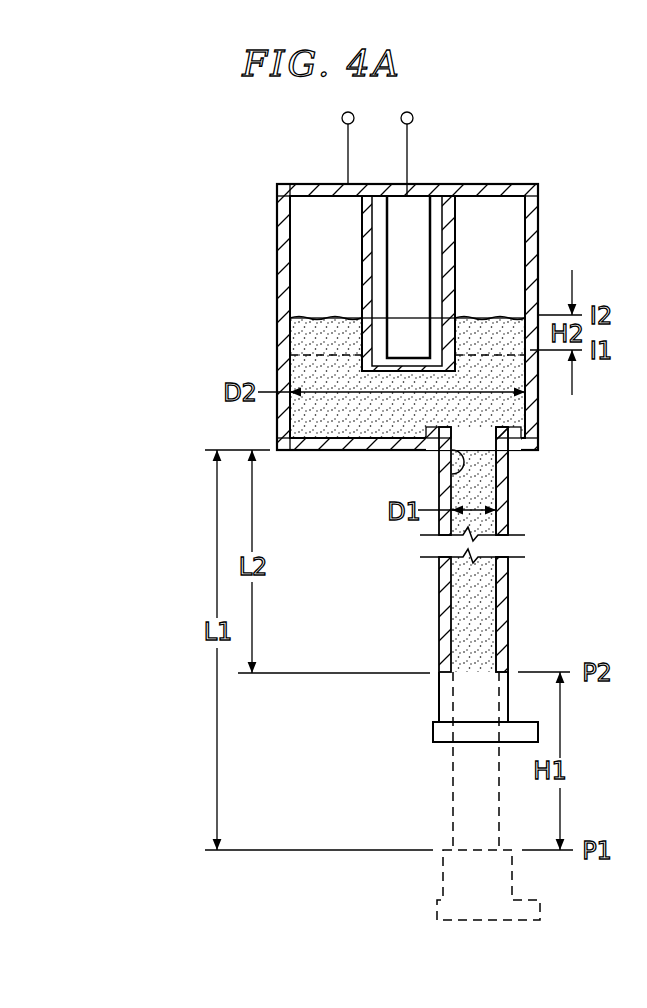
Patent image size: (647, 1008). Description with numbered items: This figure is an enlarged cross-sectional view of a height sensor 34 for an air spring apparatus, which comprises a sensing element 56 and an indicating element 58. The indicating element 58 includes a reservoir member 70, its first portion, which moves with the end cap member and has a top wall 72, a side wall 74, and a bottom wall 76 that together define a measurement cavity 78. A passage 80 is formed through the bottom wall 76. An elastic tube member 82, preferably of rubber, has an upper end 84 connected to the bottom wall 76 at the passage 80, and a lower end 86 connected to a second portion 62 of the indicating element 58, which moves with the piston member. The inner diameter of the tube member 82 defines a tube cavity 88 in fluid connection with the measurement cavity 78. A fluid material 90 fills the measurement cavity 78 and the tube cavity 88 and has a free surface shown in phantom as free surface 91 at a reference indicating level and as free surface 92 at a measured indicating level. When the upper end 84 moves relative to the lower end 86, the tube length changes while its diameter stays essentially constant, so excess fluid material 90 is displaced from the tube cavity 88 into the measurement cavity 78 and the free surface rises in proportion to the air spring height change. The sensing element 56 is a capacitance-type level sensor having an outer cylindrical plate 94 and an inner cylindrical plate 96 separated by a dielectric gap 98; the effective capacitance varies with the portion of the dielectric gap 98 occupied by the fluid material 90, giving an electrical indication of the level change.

The height sensor 34 is at (454, 100).
The sensing element 56 is at (462, 258).
The indicating element 58 is at (585, 220).
The second portion 62 is at (440, 697).
The reservoir member 70 is at (258, 303).
The top wall 72 is at (484, 184).
The side wall 74 is at (278, 232).
The bottom wall 76 is at (334, 450).
The measurement cavity 78 is at (344, 266).
The passage 80 is at (440, 472).
The elastic tube member 82 is at (430, 593).
The upper end 84 is at (509, 457).
The lower end 86 is at (512, 652).
The tube cavity 88 is at (478, 590).
The fluid material 90 is at (305, 370).
The free surface 91 is at (320, 351).
The free surface 92 is at (478, 316).
The outer cylindrical plate 94 is at (362, 232).
The inner cylindrical plate 96 is at (422, 210).
The dielectric gap 98 is at (368, 205).